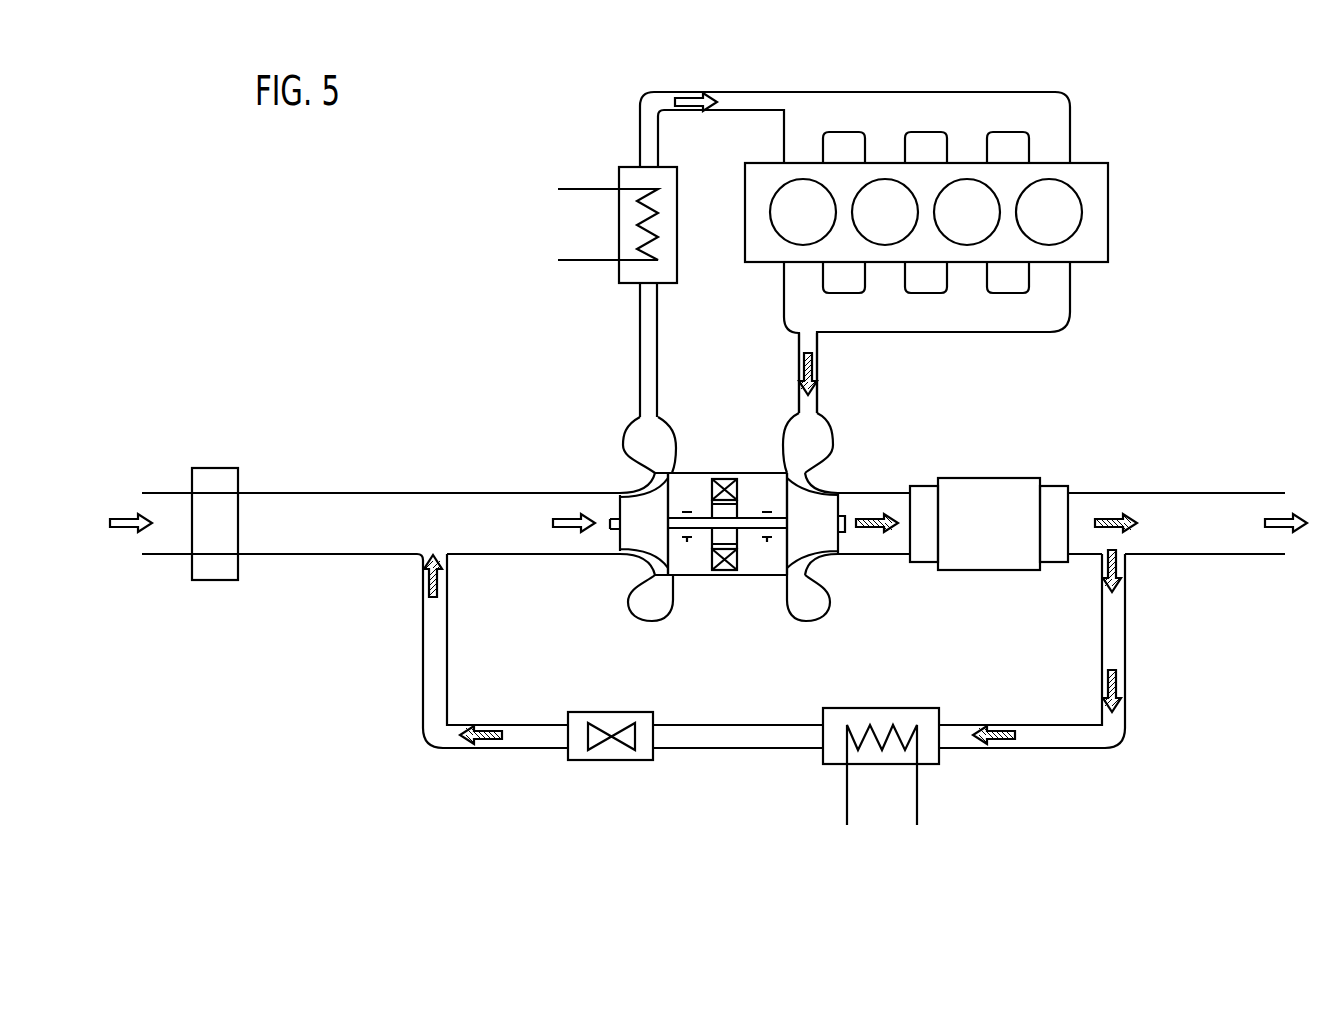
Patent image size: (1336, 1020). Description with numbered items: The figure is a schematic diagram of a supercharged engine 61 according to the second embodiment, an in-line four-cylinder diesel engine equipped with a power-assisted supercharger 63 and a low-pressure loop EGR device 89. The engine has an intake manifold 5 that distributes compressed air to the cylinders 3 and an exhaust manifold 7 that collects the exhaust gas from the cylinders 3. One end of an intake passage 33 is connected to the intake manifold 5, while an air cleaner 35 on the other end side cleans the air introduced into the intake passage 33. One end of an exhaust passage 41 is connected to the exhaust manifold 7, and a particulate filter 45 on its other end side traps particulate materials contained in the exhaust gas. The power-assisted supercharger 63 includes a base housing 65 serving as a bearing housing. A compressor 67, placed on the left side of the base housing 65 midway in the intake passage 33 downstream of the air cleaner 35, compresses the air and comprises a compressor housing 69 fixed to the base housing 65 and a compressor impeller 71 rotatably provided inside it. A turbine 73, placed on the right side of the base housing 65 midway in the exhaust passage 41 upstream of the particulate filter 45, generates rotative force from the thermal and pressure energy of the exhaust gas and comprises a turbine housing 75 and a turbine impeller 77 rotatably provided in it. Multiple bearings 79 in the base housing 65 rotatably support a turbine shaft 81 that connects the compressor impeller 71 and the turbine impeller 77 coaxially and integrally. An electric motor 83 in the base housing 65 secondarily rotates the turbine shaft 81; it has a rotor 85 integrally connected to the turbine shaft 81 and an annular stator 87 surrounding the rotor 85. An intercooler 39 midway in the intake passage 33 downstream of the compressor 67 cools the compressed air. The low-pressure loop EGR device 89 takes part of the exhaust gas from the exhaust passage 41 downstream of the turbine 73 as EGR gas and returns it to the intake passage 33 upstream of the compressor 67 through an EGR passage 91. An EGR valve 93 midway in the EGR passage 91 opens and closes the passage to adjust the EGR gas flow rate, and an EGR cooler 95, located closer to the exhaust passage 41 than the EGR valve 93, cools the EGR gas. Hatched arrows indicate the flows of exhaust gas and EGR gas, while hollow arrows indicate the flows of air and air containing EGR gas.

The cylinder 3 is at (795, 226).
The intake manifold 5 is at (1070, 133).
The exhaust manifold 7 is at (1070, 296).
The intake passage 33 is at (640, 365).
The air cleaner 35 is at (210, 467).
The intercooler 39 is at (634, 167).
The exhaust passage 41 is at (818, 372).
The particulate filter 45 is at (980, 478).
The supercharged engine 61 is at (1150, 176).
The power-assisted supercharger 63 is at (689, 466).
The base housing 65 is at (750, 576).
The compressor 67 is at (618, 445).
The compressor housing 69 is at (633, 603).
The compressor impeller 71 is at (615, 545).
The turbine 73 is at (842, 435).
The turbine housing 75 is at (804, 623).
The turbine impeller 77 is at (818, 554).
The bearing 79 is at (687, 543).
The turbine shaft 81 is at (724, 571).
The electric motor 83 is at (747, 470).
The rotor 85 is at (738, 508).
The annular stator 87 is at (724, 479).
The low-pressure loop EGR device 89 is at (1167, 683).
The EGR passage 91 is at (1020, 749).
The EGR valve 93 is at (610, 762).
The EGR cooler 95 is at (925, 767).